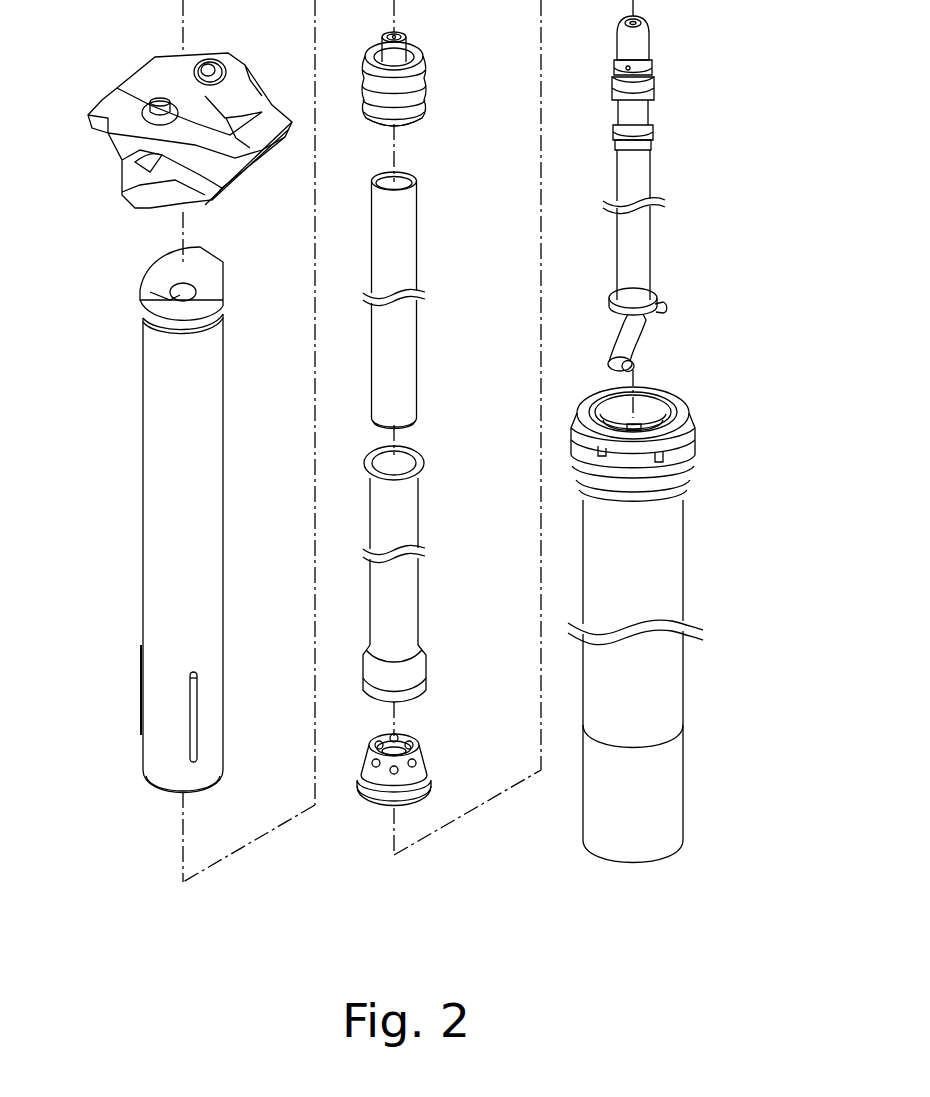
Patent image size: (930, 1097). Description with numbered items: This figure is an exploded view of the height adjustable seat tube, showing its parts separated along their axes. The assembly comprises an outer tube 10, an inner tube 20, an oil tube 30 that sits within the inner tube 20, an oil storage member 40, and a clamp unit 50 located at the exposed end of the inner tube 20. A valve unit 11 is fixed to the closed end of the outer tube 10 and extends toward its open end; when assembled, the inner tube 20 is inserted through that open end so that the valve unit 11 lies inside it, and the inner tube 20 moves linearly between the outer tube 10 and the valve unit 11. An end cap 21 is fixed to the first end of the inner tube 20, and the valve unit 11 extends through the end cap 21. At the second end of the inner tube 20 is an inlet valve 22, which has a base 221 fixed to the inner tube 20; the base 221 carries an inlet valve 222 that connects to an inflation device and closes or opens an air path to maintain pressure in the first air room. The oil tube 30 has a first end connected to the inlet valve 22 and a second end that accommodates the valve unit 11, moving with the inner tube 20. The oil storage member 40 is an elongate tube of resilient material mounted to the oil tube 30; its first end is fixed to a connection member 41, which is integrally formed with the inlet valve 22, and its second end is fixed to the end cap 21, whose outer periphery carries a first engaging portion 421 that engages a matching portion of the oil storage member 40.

The outer tube 10 is at (691, 591).
The valve unit 11 is at (636, 172).
The inner tube 20 is at (136, 441).
The end cap 21 is at (432, 752).
The inlet valve 22 is at (439, 63).
The base 221 is at (414, 78).
The inlet valve 222 is at (401, 50).
The oil tube 30 is at (426, 350).
The oil storage member 40 is at (426, 594).
The connection member 41 is at (410, 117).
The first engaging portion 421 is at (421, 768).
The clamp unit 50 is at (124, 74).